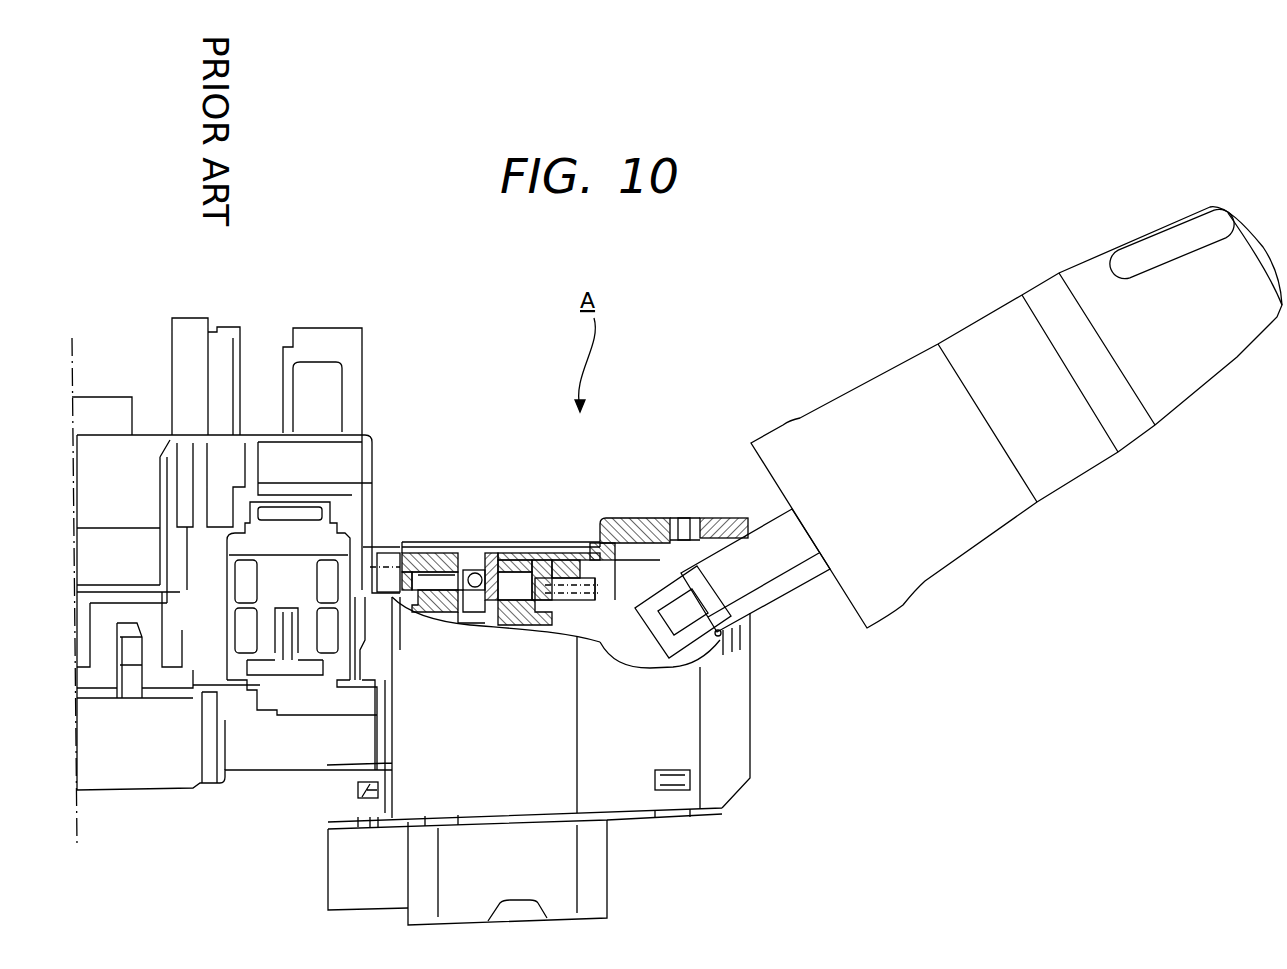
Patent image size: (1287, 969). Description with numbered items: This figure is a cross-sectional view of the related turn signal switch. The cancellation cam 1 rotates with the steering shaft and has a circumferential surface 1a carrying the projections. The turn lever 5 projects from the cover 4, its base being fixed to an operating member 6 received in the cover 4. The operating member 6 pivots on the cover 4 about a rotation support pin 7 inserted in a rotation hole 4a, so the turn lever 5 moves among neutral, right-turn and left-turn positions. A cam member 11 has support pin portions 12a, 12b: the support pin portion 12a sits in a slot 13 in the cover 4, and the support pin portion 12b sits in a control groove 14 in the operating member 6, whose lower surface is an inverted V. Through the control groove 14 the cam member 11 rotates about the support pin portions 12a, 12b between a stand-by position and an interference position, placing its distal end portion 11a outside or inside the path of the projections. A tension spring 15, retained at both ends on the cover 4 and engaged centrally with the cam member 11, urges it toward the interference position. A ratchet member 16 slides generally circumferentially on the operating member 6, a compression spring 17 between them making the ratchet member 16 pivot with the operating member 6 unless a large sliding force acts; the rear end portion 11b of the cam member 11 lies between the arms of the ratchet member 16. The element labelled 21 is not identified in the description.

The cancellation cam 1 is at (382, 436).
The circumferential surface 1a is at (385, 473).
The cover 4 is at (635, 520).
The rotation hole 4a is at (677, 517).
The turn lever 5 is at (797, 578).
The operating member 6 is at (717, 518).
The rotation support pin 7 is at (690, 515).
The cam member 11 is at (442, 592).
The distal end portion 11a is at (440, 555).
The rear end portion 11b is at (525, 560).
The support pin portion 12a is at (492, 555).
The support pin portion 12b is at (484, 612).
The slot 13 is at (470, 555).
The control groove 14 is at (470, 605).
The tension spring 15 is at (476, 571).
The ratchet member 16 is at (556, 560).
The compression spring 17 is at (566, 632).
The terminal 21 is at (387, 556).